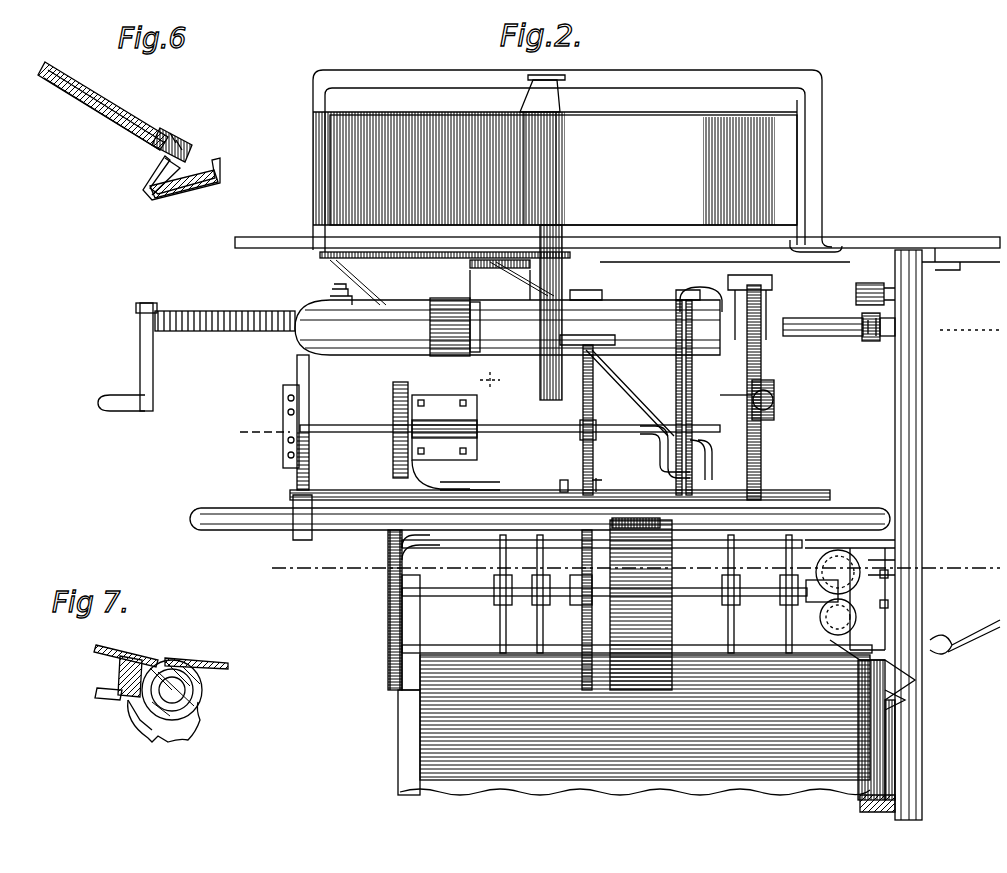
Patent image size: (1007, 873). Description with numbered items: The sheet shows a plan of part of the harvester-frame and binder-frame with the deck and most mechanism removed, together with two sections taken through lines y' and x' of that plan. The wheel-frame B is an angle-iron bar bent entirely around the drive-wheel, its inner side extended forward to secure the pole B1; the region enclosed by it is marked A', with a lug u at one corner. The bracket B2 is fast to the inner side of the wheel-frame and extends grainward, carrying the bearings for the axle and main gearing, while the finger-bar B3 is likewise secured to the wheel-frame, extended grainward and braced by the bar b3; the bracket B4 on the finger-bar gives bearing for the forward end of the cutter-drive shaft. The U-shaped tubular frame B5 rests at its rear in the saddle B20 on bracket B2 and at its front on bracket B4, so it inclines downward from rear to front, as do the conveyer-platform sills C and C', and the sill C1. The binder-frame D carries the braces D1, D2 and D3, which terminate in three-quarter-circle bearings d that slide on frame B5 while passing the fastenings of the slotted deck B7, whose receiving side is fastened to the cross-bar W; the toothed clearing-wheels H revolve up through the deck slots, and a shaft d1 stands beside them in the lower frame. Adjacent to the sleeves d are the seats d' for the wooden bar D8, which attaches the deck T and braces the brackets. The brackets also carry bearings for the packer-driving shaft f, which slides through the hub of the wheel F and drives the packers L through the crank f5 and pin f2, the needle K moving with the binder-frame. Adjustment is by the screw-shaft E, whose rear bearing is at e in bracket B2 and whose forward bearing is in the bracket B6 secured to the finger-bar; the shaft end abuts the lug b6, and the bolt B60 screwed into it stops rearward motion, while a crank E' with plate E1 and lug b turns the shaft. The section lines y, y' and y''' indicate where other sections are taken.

In FIG. 6, the screw-shaft E is at (103, 106).
In FIG. 6, the lug b6 is at (182, 138).
In FIG. 2, the lug b6 is at (872, 338).
In FIG. 6, the bolt B60 is at (180, 143).
In FIG. 2, the bolt B60 is at (872, 338).
In FIG. 6, the bracket B6 is at (152, 165).
In FIG. 2, the bracket B6 is at (900, 330).
In FIG. 7, the plate T is at (225, 633).
In FIG. 7, the deck B7 is at (175, 668).
In FIG. 7, the wooden bar D8 is at (78, 680).
In FIG. 2, the wooden bar D8 is at (554, 490).
In FIG. 7, the seats d' is at (108, 707).
In FIG. 2, the seats d' is at (310, 506).
In FIG. 7, the tubular frame B5 is at (200, 692).
In FIG. 2, the tubular frame B5 is at (276, 532).
In FIG. 7, the bearings d is at (164, 723).
In FIG. 2, the bearings d is at (673, 519).
In FIG. 2, the wheel-frame B is at (703, 92).
In FIG. 2, the casing A' is at (555, 168).
In FIG. 2, the lug u is at (810, 235).
In FIG. 2, the bracket B2 is at (488, 282).
In FIG. 2, the rear bearing e is at (440, 322).
In FIG. 2, the lug b is at (957, 264).
In FIG. 2, the finger-bar B3 is at (915, 392).
In FIG. 2, the U-shaped frame D is at (386, 340).
In FIG. 2, the spring and crank E' is at (196, 357).
In FIG. 2, the brace D1 is at (317, 422).
In FIG. 2, the plate E1 is at (283, 430).
In FIG. 2, the section line y is at (258, 438).
In FIG. 2, the shaft f is at (525, 436).
In FIG. 2, the wheel F is at (393, 452).
In FIG. 2, the conveyer-platform sill C1 is at (444, 427).
In FIG. 2, the pin f2 is at (490, 379).
In FIG. 2, the brace D2 is at (596, 464).
In FIG. 2, the brace bar b3 is at (624, 388).
In FIG. 2, the packers L is at (700, 478).
In FIG. 2, the brace D3 is at (766, 422).
In FIG. 2, the needle K is at (772, 402).
In FIG. 2, the crank f5 is at (762, 392).
In FIG. 2, the section line y' is at (970, 338).
In FIG. 2, the section line y''' is at (636, 556).
In FIG. 2, the saddle B20 is at (402, 532).
In FIG. 2, the pole B1 is at (641, 604).
In FIG. 2, the shaft d1 is at (576, 610).
In FIG. 2, the cross-bar W is at (604, 594).
In FIG. 2, the toothed clearing-wheels H is at (530, 614).
In FIG. 2, the conveyer-platform sill C is at (624, 725).
In FIG. 2, the conveyer-platform sill C' is at (671, 736).
In FIG. 2, the bracket B4 is at (930, 622).